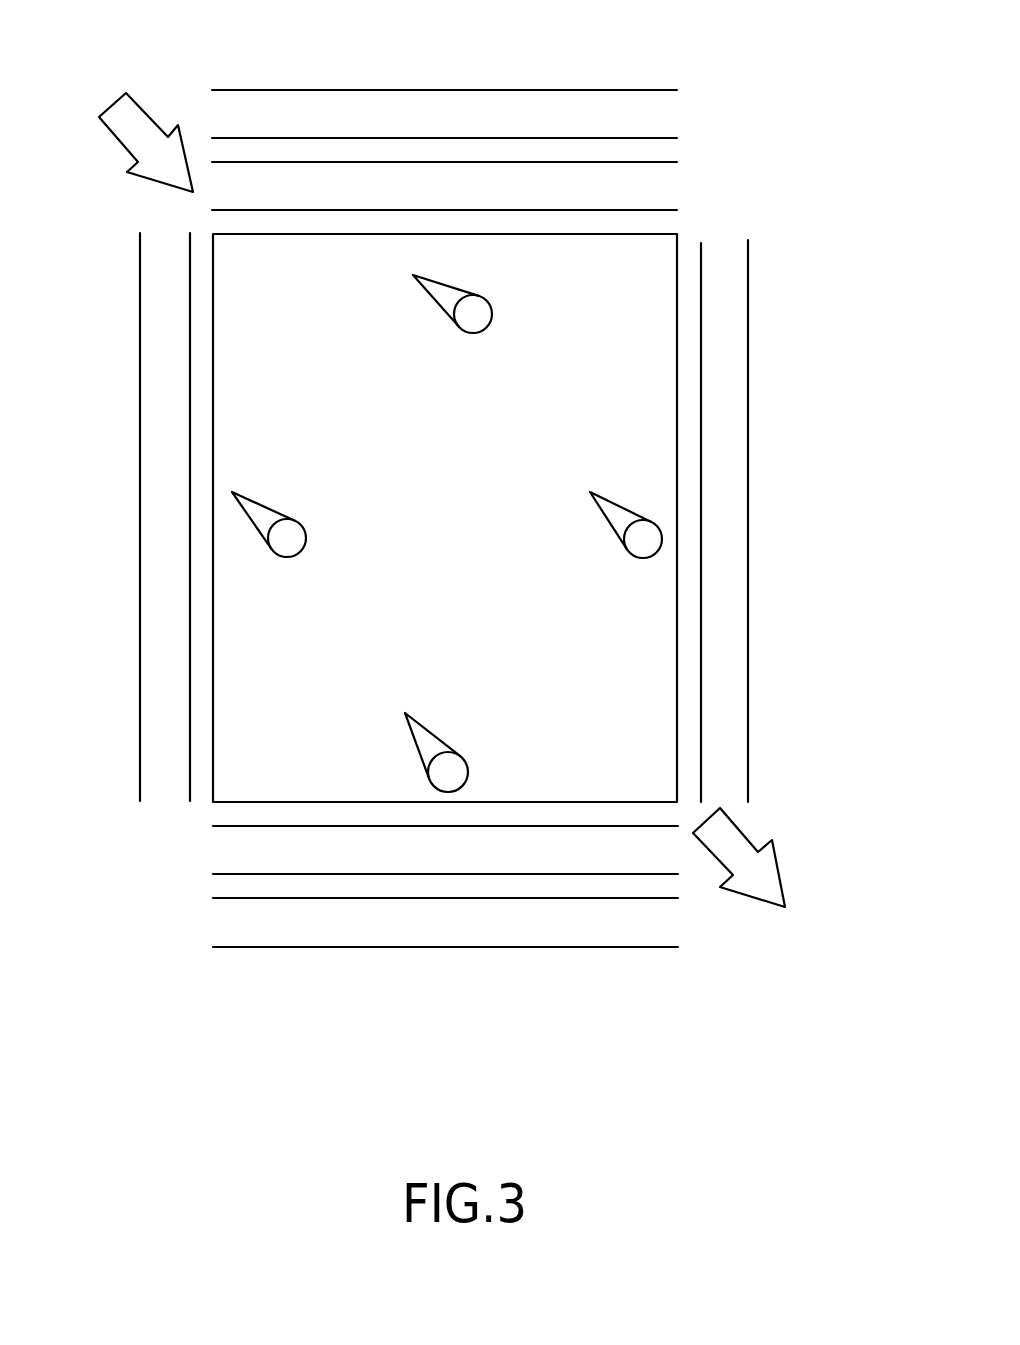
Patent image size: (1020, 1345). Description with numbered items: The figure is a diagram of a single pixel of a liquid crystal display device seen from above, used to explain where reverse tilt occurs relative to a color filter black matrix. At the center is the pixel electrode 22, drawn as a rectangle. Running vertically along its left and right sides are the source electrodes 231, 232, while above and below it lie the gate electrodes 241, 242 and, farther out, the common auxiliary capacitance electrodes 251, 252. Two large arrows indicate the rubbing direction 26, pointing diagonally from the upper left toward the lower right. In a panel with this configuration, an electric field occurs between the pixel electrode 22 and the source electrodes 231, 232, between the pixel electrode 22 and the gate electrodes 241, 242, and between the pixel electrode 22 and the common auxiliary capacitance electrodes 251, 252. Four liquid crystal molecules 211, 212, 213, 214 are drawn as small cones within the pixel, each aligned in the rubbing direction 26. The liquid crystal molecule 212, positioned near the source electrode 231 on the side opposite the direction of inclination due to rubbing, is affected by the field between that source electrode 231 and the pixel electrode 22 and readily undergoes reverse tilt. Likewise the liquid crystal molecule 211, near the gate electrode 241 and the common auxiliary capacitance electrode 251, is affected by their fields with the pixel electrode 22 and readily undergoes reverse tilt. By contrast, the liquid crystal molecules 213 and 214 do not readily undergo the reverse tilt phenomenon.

The pixel electrode 22 is at (667, 263).
The rubbing direction 26 is at (127, 92).
The liquid crystal molecule 211 is at (453, 283).
The liquid crystal molecule 212 is at (265, 502).
The liquid crystal molecule 213 is at (603, 493).
The liquid crystal molecule 214 is at (435, 730).
The source electrode 231 is at (167, 620).
The source electrode 232 is at (733, 330).
The gate electrode 241 is at (648, 198).
The gate electrode 242 is at (243, 855).
The common auxiliary capacitance electrode 251 is at (563, 100).
The common auxiliary capacitance electrode 252 is at (238, 937).